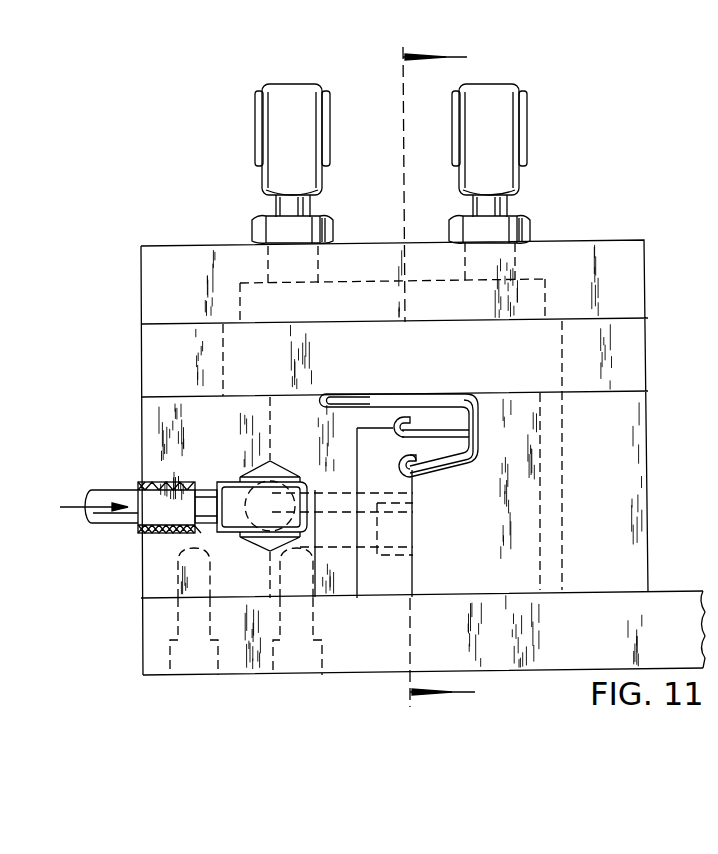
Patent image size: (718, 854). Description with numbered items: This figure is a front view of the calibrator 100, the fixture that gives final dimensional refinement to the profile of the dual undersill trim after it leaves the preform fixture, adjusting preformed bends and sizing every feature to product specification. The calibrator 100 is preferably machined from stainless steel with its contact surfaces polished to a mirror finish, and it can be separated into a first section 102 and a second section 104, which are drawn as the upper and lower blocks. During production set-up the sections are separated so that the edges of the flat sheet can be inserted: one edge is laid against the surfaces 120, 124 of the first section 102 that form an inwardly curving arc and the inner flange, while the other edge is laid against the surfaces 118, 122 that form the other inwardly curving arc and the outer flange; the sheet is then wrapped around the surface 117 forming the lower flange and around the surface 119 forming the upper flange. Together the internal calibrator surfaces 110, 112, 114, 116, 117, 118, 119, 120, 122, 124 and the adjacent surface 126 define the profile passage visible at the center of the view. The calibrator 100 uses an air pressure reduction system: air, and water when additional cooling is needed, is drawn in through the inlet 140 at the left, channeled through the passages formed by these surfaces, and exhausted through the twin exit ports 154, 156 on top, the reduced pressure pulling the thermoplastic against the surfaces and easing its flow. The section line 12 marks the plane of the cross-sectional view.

The section line 12 is at (439, 379).
The calibrator 100 is at (617, 143).
The first section 102 is at (173, 262).
The second section 104 is at (620, 252).
The internal calibrator surface 110 is at (408, 394).
The internal calibrator surface 112 is at (392, 414).
The internal calibrator surface 114 is at (316, 402).
The internal calibrator surface 116 is at (480, 427).
The surface forming the lower flange 117 is at (481, 402).
The surface forming the inwardly curving arc 118 is at (417, 477).
The surface forming the upper flange 119 is at (480, 458).
The surface forming the inwardly curving arc 120 is at (435, 438).
The surface forming the outer flange 122 is at (400, 463).
The surface forming the inner flange 124 is at (393, 429).
The upper leg of clip 126 is at (370, 403).
The inlet 140 is at (92, 490).
The exit port 154 is at (277, 133).
The exit port 156 is at (503, 138).